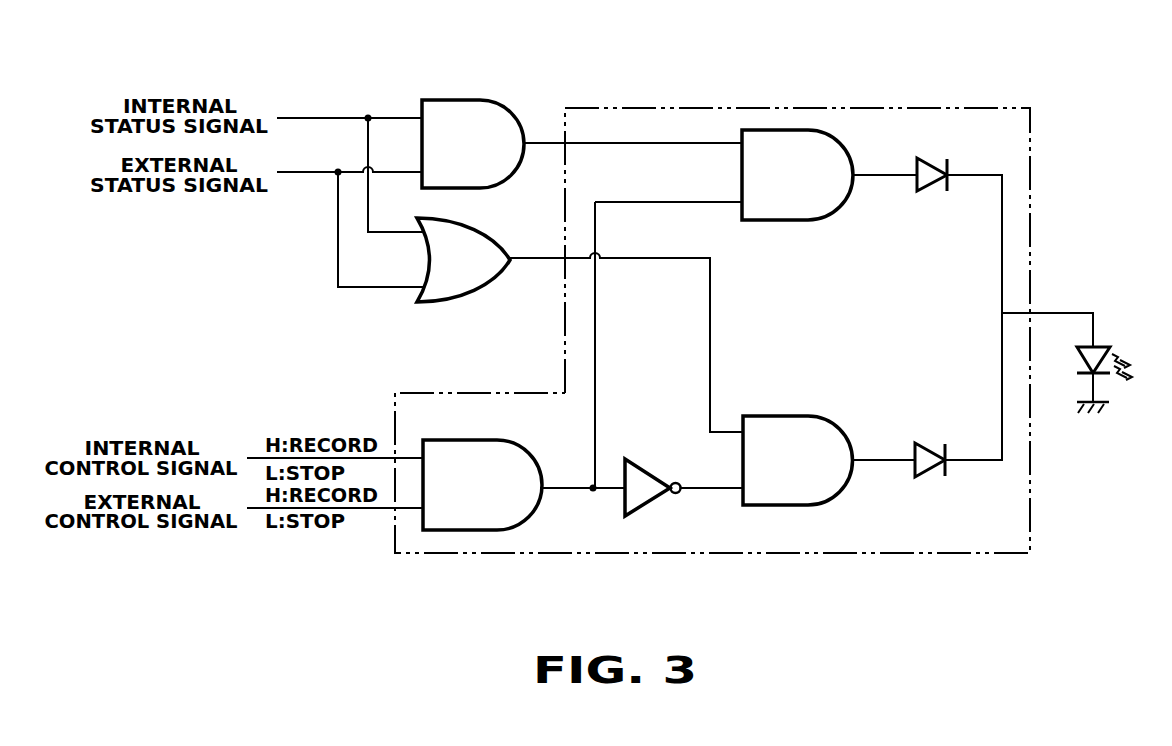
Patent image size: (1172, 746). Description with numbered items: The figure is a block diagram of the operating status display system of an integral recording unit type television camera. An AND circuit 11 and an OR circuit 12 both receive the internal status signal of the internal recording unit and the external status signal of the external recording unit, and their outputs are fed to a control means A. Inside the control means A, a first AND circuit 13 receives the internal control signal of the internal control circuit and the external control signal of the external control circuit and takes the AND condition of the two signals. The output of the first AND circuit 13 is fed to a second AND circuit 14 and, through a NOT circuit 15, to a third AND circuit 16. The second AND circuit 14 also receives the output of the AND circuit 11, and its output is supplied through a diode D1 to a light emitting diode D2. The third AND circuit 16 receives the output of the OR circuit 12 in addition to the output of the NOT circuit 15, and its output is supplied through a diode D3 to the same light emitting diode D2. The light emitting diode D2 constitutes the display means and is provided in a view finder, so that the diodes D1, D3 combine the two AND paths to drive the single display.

The AND circuit 11 is at (485, 100).
The OR circuit 12 is at (494, 232).
The first AND circuit 13 is at (520, 448).
The second AND circuit 14 is at (803, 220).
The NOT circuit 15 is at (645, 465).
The third AND circuit 16 is at (800, 416).
The control means A is at (629, 108).
The diode D1 is at (935, 196).
The light emitting diode D2 is at (1106, 346).
The diode D3 is at (930, 442).